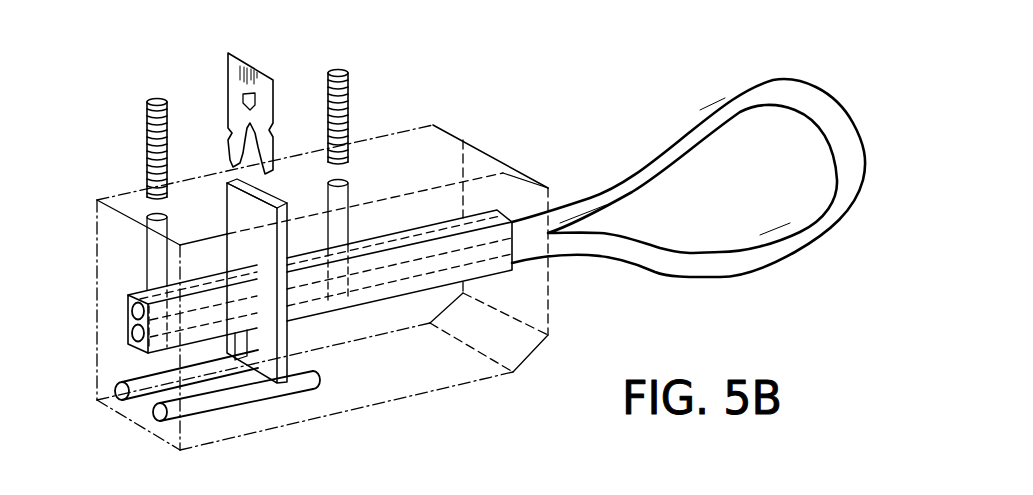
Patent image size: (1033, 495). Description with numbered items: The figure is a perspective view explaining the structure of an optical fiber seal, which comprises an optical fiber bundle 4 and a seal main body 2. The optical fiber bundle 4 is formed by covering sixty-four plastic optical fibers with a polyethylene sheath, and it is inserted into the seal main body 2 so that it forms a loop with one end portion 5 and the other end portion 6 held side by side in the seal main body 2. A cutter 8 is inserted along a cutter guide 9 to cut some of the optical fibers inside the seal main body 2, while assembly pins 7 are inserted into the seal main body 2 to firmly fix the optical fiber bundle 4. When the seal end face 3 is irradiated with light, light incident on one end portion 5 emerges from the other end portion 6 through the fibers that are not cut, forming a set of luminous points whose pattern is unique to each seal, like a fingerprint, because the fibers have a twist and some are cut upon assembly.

The seal main body 2 is at (493, 152).
The seal end face 3 is at (107, 357).
The optical fiber bundle 4 is at (678, 119).
The one end portion 5 is at (131, 303).
The other end portion 6 is at (131, 333).
The assembly pins 7 is at (158, 99).
The cutter 8 is at (268, 80).
The cutter guide 9 is at (286, 336).